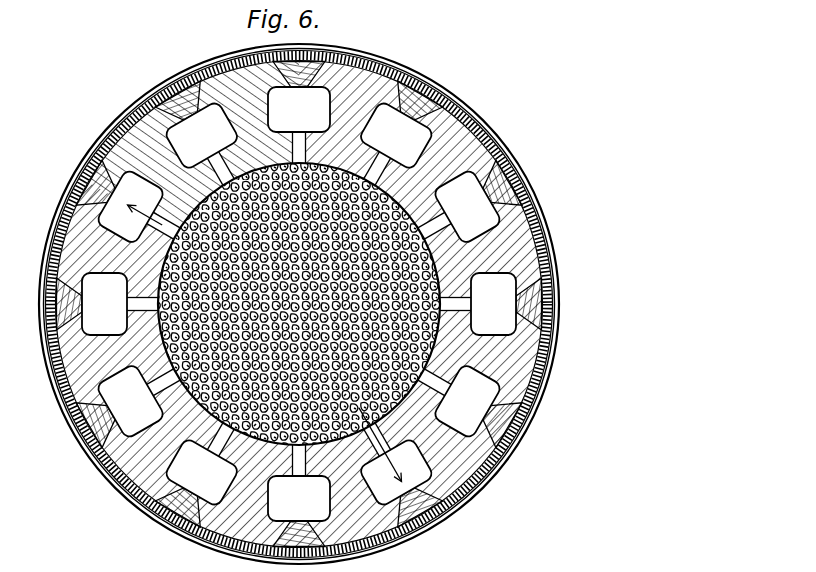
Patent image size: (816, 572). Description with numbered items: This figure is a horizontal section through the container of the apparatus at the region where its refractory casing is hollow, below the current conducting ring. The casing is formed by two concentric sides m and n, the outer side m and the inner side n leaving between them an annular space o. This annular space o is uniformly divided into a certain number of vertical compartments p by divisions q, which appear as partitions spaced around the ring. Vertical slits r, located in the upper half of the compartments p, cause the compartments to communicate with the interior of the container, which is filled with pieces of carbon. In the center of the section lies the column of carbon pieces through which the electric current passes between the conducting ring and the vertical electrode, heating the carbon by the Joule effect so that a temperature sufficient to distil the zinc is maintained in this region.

The outer concentric side m is at (483, 462).
The inner concentric side n is at (418, 405).
The annular space o is at (299, 304).
The vertical compartment p is at (298, 304).
The division q is at (433, 447).
The vertical slit r is at (377, 167).